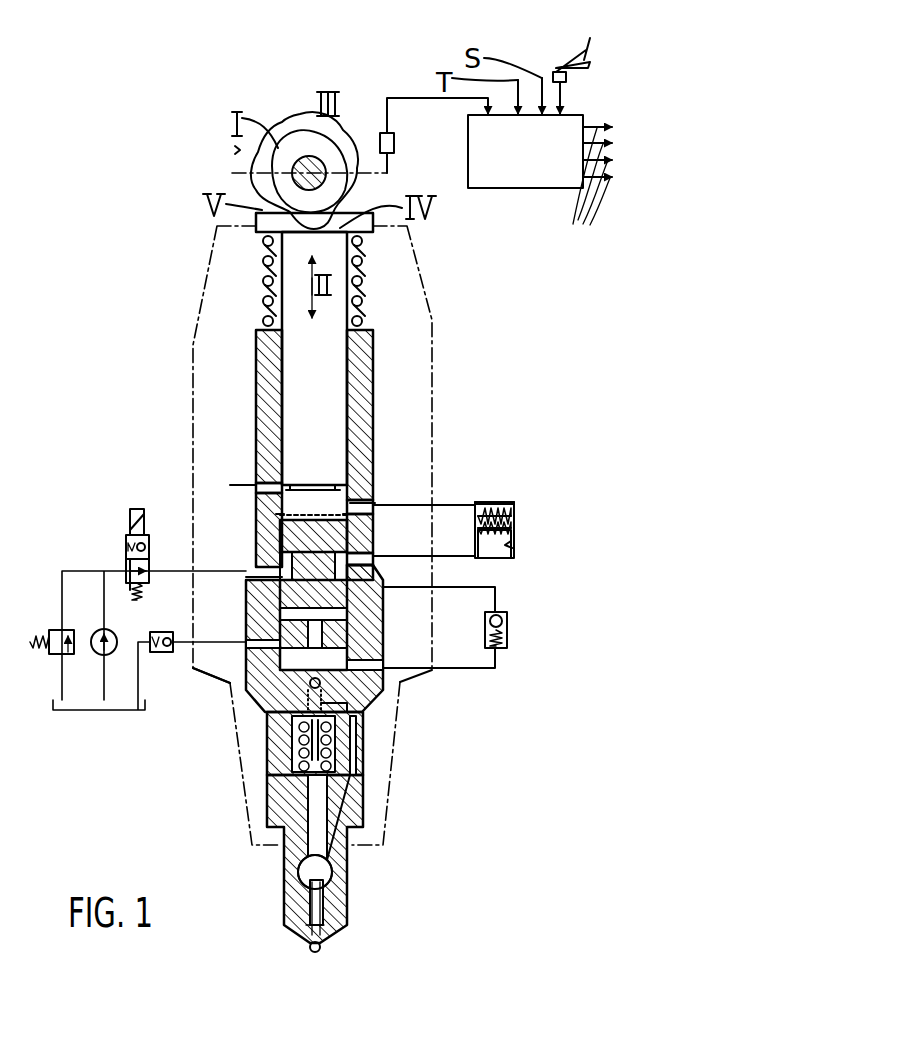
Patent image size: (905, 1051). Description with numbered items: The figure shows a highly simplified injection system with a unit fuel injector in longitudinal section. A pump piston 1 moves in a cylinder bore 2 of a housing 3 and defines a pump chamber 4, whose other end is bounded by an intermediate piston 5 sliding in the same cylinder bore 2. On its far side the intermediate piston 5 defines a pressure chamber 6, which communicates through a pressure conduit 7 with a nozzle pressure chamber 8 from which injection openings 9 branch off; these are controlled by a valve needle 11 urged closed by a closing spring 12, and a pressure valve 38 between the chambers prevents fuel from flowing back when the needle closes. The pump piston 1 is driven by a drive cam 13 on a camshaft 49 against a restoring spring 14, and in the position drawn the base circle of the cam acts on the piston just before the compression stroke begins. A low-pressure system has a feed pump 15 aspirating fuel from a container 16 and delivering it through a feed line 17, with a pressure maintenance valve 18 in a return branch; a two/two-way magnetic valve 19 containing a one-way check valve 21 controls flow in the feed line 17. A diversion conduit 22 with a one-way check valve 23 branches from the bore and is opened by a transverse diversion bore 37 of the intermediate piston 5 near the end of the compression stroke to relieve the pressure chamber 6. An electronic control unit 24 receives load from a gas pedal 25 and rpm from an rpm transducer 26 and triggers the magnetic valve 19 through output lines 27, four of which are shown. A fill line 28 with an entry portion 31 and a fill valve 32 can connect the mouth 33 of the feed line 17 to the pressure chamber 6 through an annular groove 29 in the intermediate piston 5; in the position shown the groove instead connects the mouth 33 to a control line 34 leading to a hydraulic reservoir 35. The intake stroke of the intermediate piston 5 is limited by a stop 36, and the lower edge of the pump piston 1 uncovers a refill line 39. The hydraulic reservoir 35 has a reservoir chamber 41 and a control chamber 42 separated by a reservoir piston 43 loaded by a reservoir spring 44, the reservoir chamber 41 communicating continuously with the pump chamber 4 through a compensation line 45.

The pump piston 1 is at (330, 297).
The cylinder bore 2 is at (350, 380).
The housing 3 is at (256, 350).
The pump chamber 4 is at (320, 490).
The intermediate piston 5 is at (373, 520).
The pressure chamber 6 is at (275, 690).
The pressure conduit 7 is at (352, 746).
The nozzle pressure chamber 8 is at (332, 872).
The injection openings 9 is at (322, 943).
The valve needle 11 is at (310, 800).
The closing spring 12 is at (300, 750).
The drive cam 13 is at (240, 150).
The restoring spring 14 is at (366, 262).
The feed pump 15 is at (92, 636).
The fuel container 16 is at (82, 716).
The feed line 17 is at (100, 575).
The pressure maintenance valve 18 is at (52, 630).
The 2/2-way magnetic valve 19 is at (128, 540).
The one-way check valve 21 is at (258, 585).
The diversion conduit 22 is at (218, 683).
The one-way check valve 23 is at (160, 652).
The electronic control unit 24 is at (506, 184).
The gas pedal 25 is at (556, 54).
The rpm transducer 26 is at (394, 143).
The output lines 27 is at (578, 184).
The fill line 28 is at (480, 668).
The annular groove 29 is at (280, 540).
The entry portion 31 is at (383, 600).
The fill valve 32 is at (505, 625).
The mouth 33 is at (292, 566).
The control line 34 is at (422, 520).
The hydraulic reservoir 35 is at (505, 545).
The stop 36 is at (262, 525).
The transverse diversion bore 37 is at (350, 635).
The pressure valve 38 is at (322, 700).
The refill line 39 is at (240, 484).
The reservoir chamber 41 is at (505, 515).
The control chamber 42 is at (505, 545).
The reservoir piston 43 is at (505, 527).
The reservoir spring 44 is at (505, 508).
The compensation line 45 is at (478, 502).
The camshaft 49 is at (311, 160).